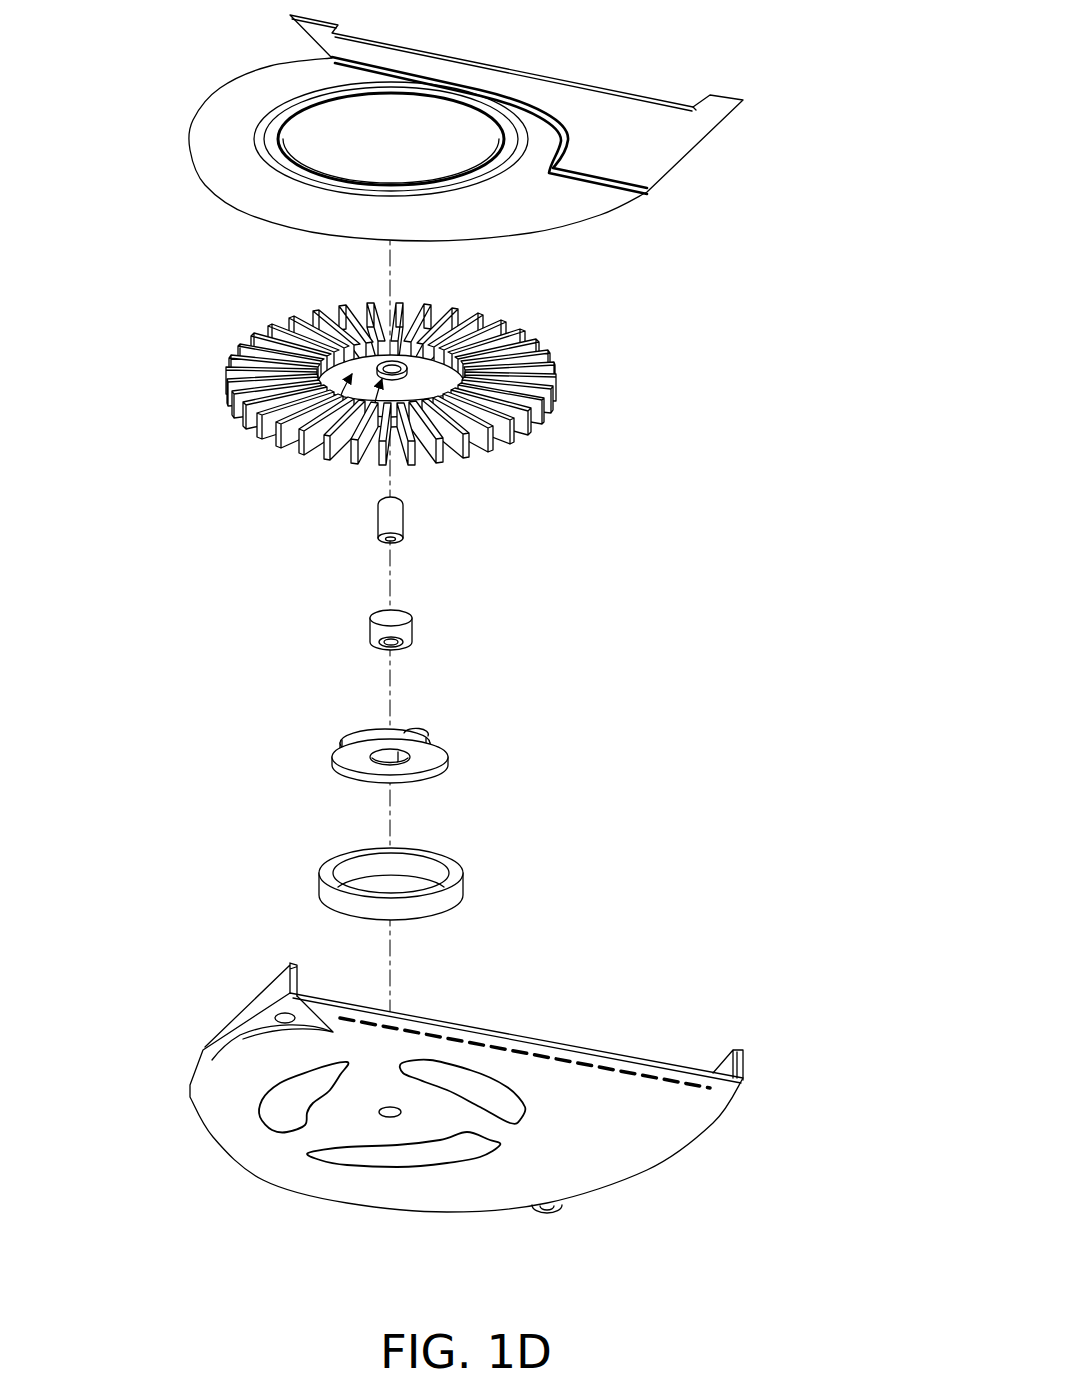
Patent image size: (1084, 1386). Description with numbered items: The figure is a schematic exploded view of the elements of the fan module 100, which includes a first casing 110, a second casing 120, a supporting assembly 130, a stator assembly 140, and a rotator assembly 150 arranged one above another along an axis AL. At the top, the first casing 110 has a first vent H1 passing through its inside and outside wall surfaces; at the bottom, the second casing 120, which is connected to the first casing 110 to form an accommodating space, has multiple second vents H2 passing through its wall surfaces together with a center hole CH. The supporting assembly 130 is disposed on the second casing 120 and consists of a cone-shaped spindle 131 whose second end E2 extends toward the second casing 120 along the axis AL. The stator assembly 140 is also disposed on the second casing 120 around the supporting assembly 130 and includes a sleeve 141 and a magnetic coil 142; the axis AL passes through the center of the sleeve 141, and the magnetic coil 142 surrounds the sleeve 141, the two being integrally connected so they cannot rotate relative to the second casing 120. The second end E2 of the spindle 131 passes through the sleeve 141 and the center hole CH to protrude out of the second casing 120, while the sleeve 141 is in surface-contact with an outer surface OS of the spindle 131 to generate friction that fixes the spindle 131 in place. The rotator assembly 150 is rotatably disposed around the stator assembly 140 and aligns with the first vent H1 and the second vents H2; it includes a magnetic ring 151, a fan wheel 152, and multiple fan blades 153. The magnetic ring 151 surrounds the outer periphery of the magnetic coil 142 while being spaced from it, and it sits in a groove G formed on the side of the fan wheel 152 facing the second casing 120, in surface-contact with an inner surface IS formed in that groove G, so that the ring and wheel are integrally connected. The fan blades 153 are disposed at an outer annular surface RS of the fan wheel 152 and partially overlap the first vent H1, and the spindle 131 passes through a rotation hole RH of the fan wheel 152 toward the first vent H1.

The fan module 100 is at (771, 1303).
The first casing 110 is at (668, 143).
The second casing 120 is at (648, 1135).
The supporting assembly 130 is at (414, 541).
The spindle 131 is at (400, 523).
The stator assembly 140 is at (460, 694).
The sleeve 141 is at (412, 629).
The magnetic coil 142 is at (431, 738).
The rotator assembly 150 is at (509, 385).
The magnetic ring 151 is at (458, 879).
The fan wheel 152 is at (533, 428).
The fan blades 153 is at (421, 384).
The first vent H1 is at (472, 130).
The second vents H2 is at (381, 1160).
The axis AL is at (393, 270).
The outer annular surface RS is at (383, 357).
The groove G is at (262, 432).
The rotation hole RH is at (350, 447).
The inner surface IS is at (417, 413).
The outer surface OS is at (376, 516).
The second end E2 is at (388, 546).
The center hole CH is at (402, 1107).